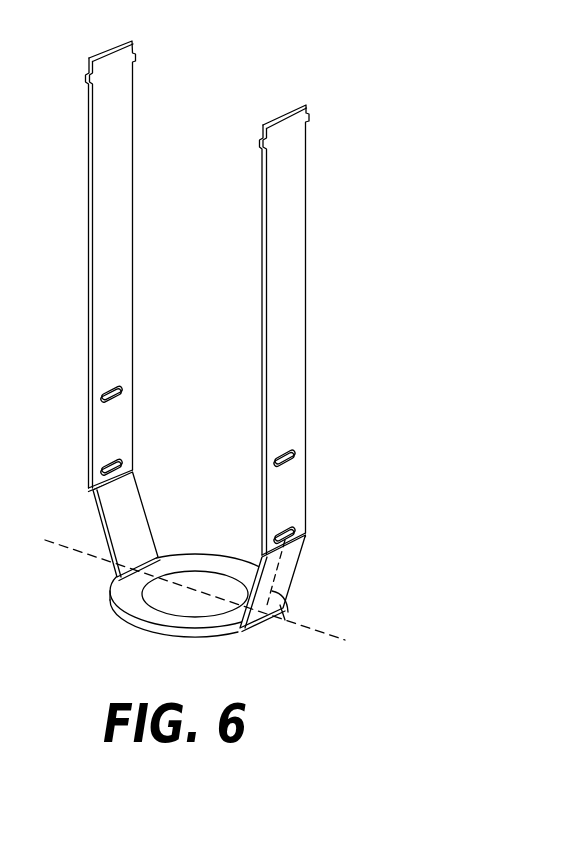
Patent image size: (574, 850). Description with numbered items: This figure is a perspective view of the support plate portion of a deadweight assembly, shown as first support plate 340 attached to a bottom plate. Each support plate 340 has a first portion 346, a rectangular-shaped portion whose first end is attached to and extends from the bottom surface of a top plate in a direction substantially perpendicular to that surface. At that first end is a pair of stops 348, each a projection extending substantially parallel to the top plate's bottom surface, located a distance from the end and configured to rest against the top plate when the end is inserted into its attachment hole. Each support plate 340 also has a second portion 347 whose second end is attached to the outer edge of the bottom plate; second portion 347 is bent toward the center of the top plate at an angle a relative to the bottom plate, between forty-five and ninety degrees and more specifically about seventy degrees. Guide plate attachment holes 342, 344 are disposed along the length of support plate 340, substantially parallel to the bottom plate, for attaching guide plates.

The first support plate 340 is at (210, 336).
The guide plate attachment hole 342 is at (295, 451).
The guide plate attachment hole 344 is at (291, 529).
The first portion 346 is at (283, 363).
The second portion 347 is at (122, 515).
The stops 348 is at (213, 293).